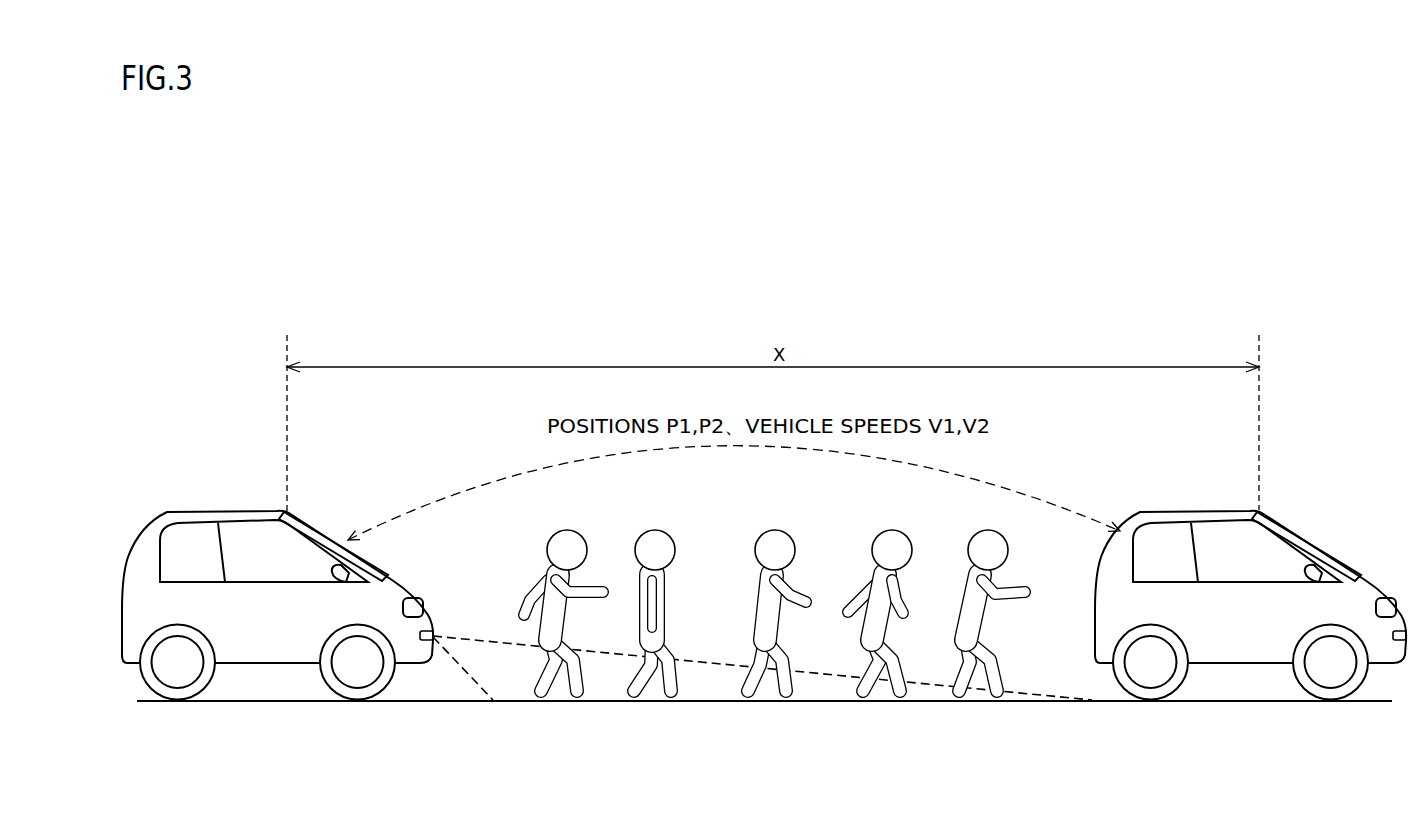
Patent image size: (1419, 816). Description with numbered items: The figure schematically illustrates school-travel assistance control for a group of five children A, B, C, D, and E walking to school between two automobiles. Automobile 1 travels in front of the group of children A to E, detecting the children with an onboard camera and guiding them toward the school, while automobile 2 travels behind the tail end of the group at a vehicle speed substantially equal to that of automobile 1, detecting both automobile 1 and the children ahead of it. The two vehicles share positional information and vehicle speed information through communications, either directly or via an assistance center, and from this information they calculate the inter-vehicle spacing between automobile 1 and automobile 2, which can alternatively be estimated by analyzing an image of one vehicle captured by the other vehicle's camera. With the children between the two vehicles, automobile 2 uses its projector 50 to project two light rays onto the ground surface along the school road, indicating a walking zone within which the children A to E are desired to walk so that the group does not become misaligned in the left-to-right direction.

The automobile 1 is at (1226, 510).
The automobile 2 is at (261, 511).
The projector 50 is at (433, 632).
The child A is at (988, 529).
The child B is at (892, 529).
The child C is at (775, 529).
The child D is at (656, 529).
The child E is at (567, 529).